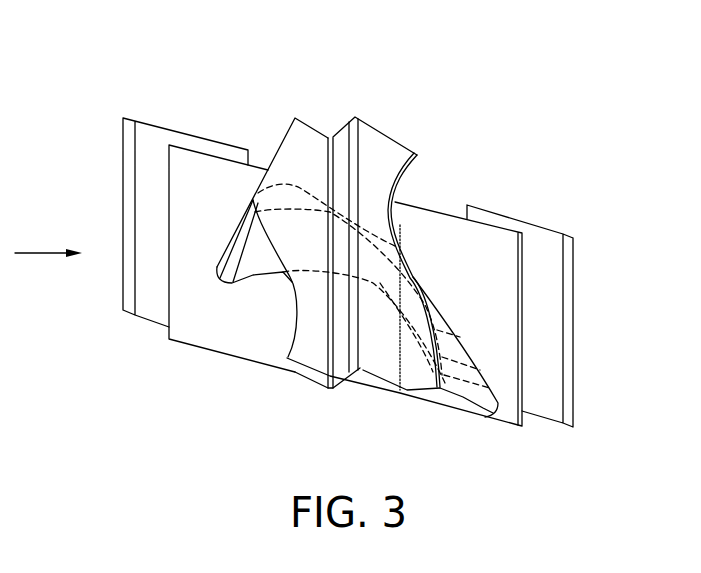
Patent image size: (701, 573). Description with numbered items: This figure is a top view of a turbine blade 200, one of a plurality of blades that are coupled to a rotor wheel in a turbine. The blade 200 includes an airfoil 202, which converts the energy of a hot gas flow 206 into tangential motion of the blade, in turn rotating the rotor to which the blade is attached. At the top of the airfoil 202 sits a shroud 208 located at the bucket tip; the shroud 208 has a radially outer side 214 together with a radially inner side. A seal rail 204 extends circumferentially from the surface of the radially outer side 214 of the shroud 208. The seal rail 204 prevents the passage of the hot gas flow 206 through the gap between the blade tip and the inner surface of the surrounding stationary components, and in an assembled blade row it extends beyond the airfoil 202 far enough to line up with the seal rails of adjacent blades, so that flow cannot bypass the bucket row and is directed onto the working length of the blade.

The blade 200 is at (110, 82).
The airfoil 202 is at (508, 359).
The seal rail 204 is at (342, 357).
The hot gas flow 206 is at (35, 258).
The shroud 208 is at (432, 138).
The radially outer side 214 is at (310, 140).